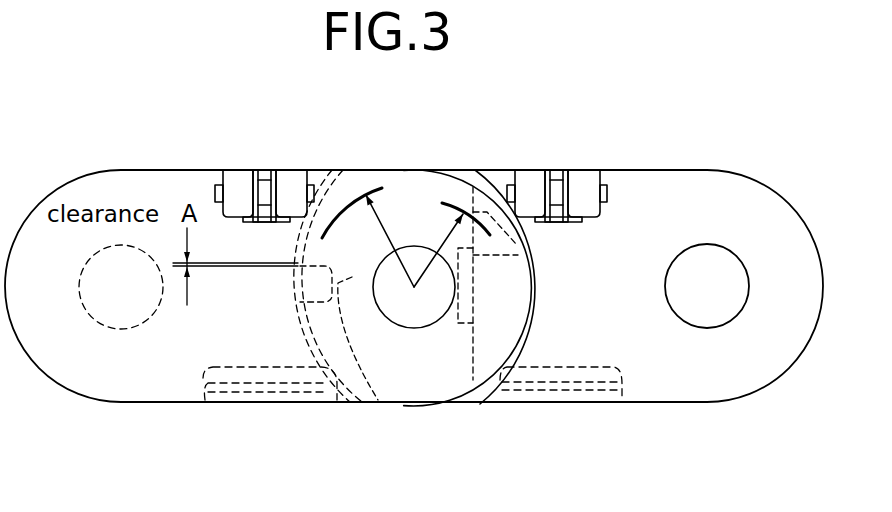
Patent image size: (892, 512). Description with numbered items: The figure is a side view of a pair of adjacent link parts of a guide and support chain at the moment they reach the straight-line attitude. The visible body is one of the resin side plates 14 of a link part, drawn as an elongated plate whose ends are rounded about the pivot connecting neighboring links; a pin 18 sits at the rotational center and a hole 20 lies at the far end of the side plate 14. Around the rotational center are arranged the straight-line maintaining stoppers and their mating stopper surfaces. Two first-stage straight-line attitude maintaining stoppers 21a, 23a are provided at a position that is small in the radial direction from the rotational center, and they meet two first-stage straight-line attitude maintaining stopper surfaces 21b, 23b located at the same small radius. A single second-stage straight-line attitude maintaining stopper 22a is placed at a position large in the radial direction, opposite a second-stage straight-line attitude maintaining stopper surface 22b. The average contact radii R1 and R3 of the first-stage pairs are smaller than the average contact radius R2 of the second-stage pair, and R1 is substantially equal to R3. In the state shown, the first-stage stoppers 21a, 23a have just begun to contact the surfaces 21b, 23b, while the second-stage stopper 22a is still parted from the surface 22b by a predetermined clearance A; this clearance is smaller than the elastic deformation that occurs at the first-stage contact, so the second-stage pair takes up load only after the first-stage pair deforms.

The side plate 14 is at (128, 183).
The pin 18 is at (418, 318).
The pin hole 20 is at (703, 317).
The first-stage straight-line attitude maintaining stopper 21a is at (414, 287).
The first-stage straight-line attitude maintaining stopper surface 21b is at (348, 338).
The second-stage straight-line attitude maintaining stopper 22a is at (296, 250).
The second-stage straight-line attitude maintaining stopper surface 22b is at (290, 277).
The first-stage straight-line attitude maintaining stopper 23a is at (446, 219).
The first-stage straight-line attitude maintaining stopper surface 23b is at (531, 248).
The average radius of the contact surface R1 is at (414, 287).
The average radius of the contact surface R2 is at (366, 195).
The average radius of the contact surface R3 is at (463, 214).